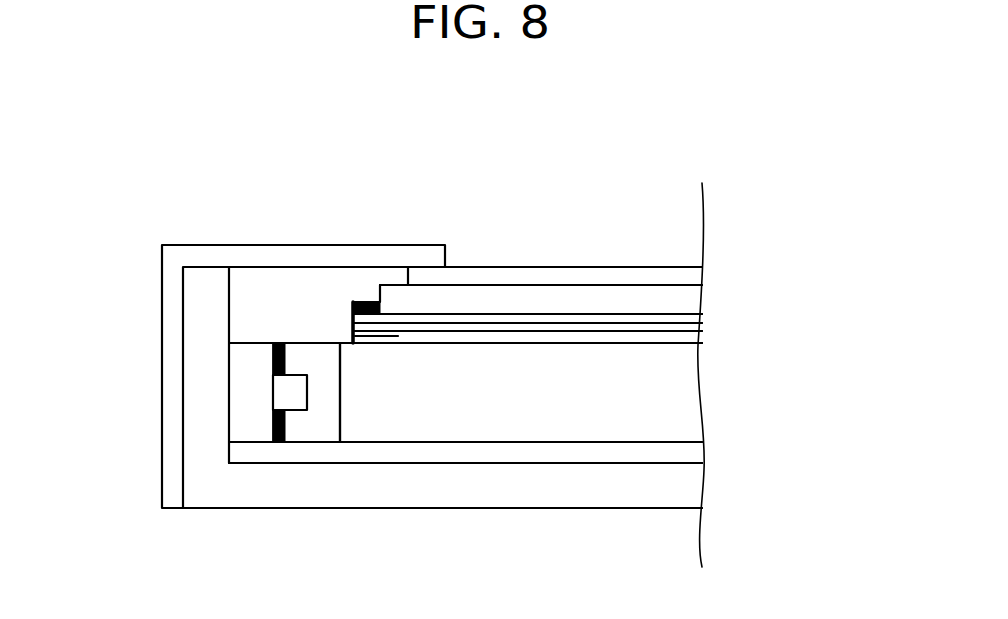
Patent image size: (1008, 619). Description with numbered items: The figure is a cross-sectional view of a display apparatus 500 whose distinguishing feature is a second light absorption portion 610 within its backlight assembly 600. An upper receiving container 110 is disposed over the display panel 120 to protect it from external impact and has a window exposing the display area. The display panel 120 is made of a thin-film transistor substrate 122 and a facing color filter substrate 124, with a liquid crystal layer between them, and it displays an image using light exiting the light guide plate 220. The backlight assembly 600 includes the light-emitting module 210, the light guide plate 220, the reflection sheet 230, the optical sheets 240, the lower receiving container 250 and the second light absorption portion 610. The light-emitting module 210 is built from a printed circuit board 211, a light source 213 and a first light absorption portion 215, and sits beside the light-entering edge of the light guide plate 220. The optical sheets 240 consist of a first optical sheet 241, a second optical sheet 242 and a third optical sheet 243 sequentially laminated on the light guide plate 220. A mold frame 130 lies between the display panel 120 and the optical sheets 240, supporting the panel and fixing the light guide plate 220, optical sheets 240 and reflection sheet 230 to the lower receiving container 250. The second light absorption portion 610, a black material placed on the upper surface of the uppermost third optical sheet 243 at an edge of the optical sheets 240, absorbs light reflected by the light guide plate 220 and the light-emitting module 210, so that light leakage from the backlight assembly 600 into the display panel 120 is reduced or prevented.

The upper receiving container 110 is at (242, 257).
The display panel 120 is at (623, 184).
The thin-film transistor substrate 122 is at (602, 288).
The color filter substrate 124 is at (537, 268).
The mold frame 130 is at (318, 280).
The second light absorption portion 610 is at (357, 302).
The light-emitting module 210 is at (80, 347).
The printed circuit board 211 is at (240, 426).
The light source 213 is at (283, 393).
The first light absorption portion 215 is at (273, 356).
The light guide plate 220 is at (693, 393).
The reflection sheet 230 is at (693, 450).
The optical sheets 240 is at (782, 290).
The first optical sheet 241 is at (698, 337).
The second optical sheet 242 is at (698, 327).
The third optical sheet 243 is at (698, 317).
The lower receiving container 250 is at (693, 485).
The display apparatus 500 is at (673, 177).
The backlight assembly 600 is at (843, 313).